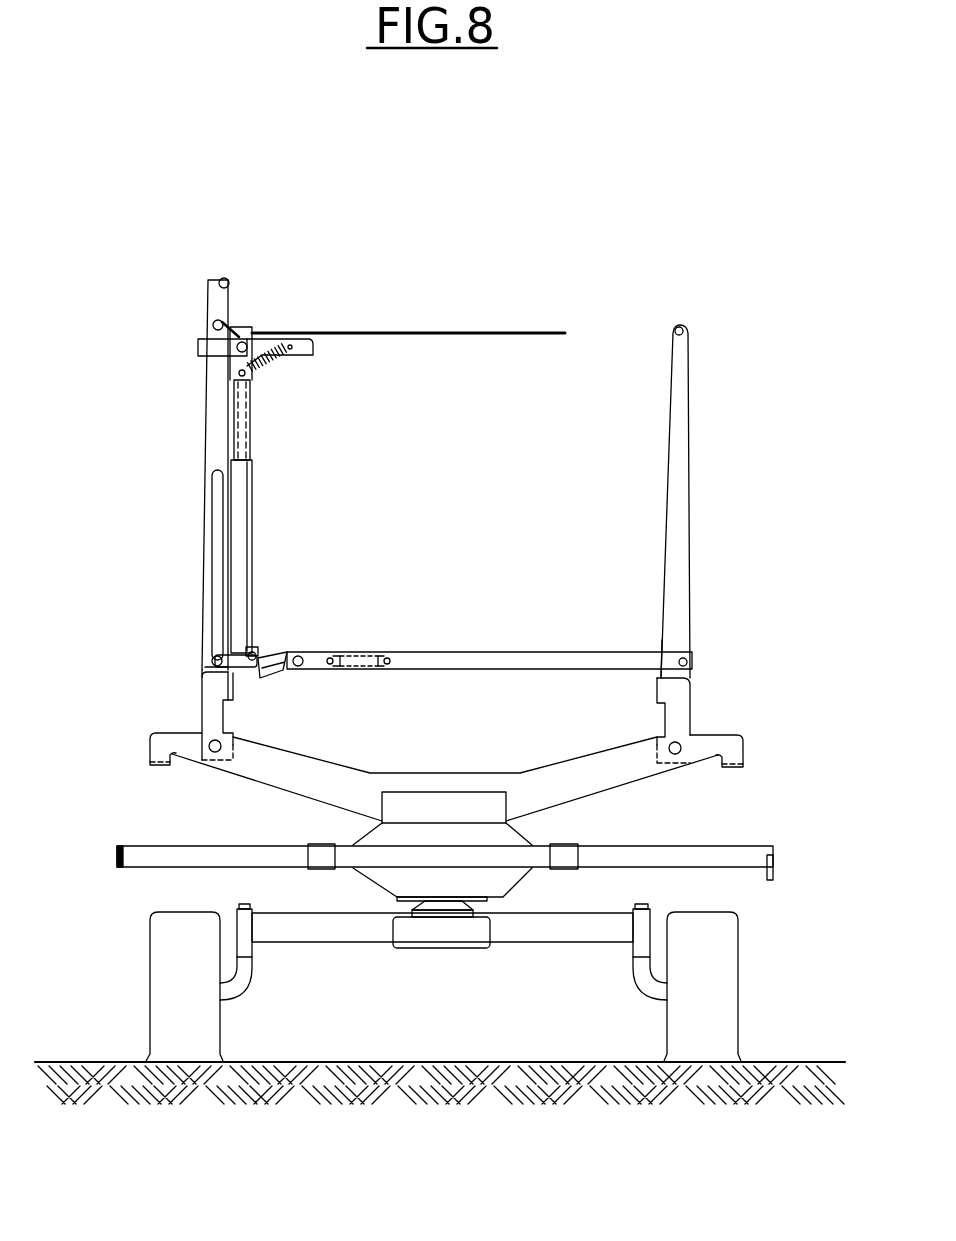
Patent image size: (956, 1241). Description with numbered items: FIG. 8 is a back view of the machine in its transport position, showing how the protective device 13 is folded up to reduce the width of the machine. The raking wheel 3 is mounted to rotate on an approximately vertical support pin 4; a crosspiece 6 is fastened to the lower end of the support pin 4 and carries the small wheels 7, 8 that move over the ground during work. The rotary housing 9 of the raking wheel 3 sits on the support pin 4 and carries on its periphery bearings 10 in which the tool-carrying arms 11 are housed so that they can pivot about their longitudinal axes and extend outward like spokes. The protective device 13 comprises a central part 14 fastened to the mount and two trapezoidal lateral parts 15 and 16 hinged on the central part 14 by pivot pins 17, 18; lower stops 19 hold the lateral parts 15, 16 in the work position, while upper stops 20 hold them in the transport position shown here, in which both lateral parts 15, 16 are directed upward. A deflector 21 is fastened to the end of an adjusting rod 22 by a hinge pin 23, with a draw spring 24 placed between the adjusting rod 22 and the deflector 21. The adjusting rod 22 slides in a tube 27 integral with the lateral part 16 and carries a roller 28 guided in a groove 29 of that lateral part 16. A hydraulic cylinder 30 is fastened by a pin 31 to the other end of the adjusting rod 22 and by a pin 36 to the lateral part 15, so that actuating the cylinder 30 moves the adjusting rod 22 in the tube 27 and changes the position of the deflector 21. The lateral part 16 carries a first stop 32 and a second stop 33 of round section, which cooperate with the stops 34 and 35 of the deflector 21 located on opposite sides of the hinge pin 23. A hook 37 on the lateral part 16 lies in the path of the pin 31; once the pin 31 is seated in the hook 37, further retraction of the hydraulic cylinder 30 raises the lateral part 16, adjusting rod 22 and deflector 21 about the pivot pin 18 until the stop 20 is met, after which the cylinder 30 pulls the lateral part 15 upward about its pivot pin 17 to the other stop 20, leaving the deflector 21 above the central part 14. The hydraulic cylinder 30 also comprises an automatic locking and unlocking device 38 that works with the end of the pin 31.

The raking wheel 3 is at (690, 849).
The support pin 4 is at (432, 906).
The crosspiece 6 is at (553, 928).
The small wheel 7 is at (723, 1025).
The small wheel 8 is at (207, 1018).
The rotary housing 9 is at (508, 877).
The bearings 10 is at (572, 855).
The tool-carrying arms 11 is at (736, 868).
The protective device 13 is at (695, 452).
The central part 14 is at (463, 783).
The lateral part 15 is at (677, 563).
The lateral part 16 is at (208, 408).
The pivot pin 17 is at (680, 742).
The pivot pin 18 is at (210, 739).
The lower stop 19 is at (160, 768).
The upper stop 20 is at (238, 690).
The deflector 21 is at (427, 333).
The adjusting rod 22 is at (245, 543).
The hinge pin 23 is at (254, 338).
The draw spring 24 is at (268, 368).
The tube 27 is at (252, 440).
The roller 28 is at (214, 642).
The groove 29 is at (212, 508).
The hydraulic cylinder 30 is at (535, 650).
The pin 31 is at (215, 667).
The first stop 32 is at (225, 279).
The second stop 33 is at (213, 322).
The stop 34 is at (198, 348).
The stop 35 is at (240, 330).
The pin 36 is at (692, 656).
The hook 37 is at (255, 651).
The automatic locking and unlocking device 38 is at (295, 678).